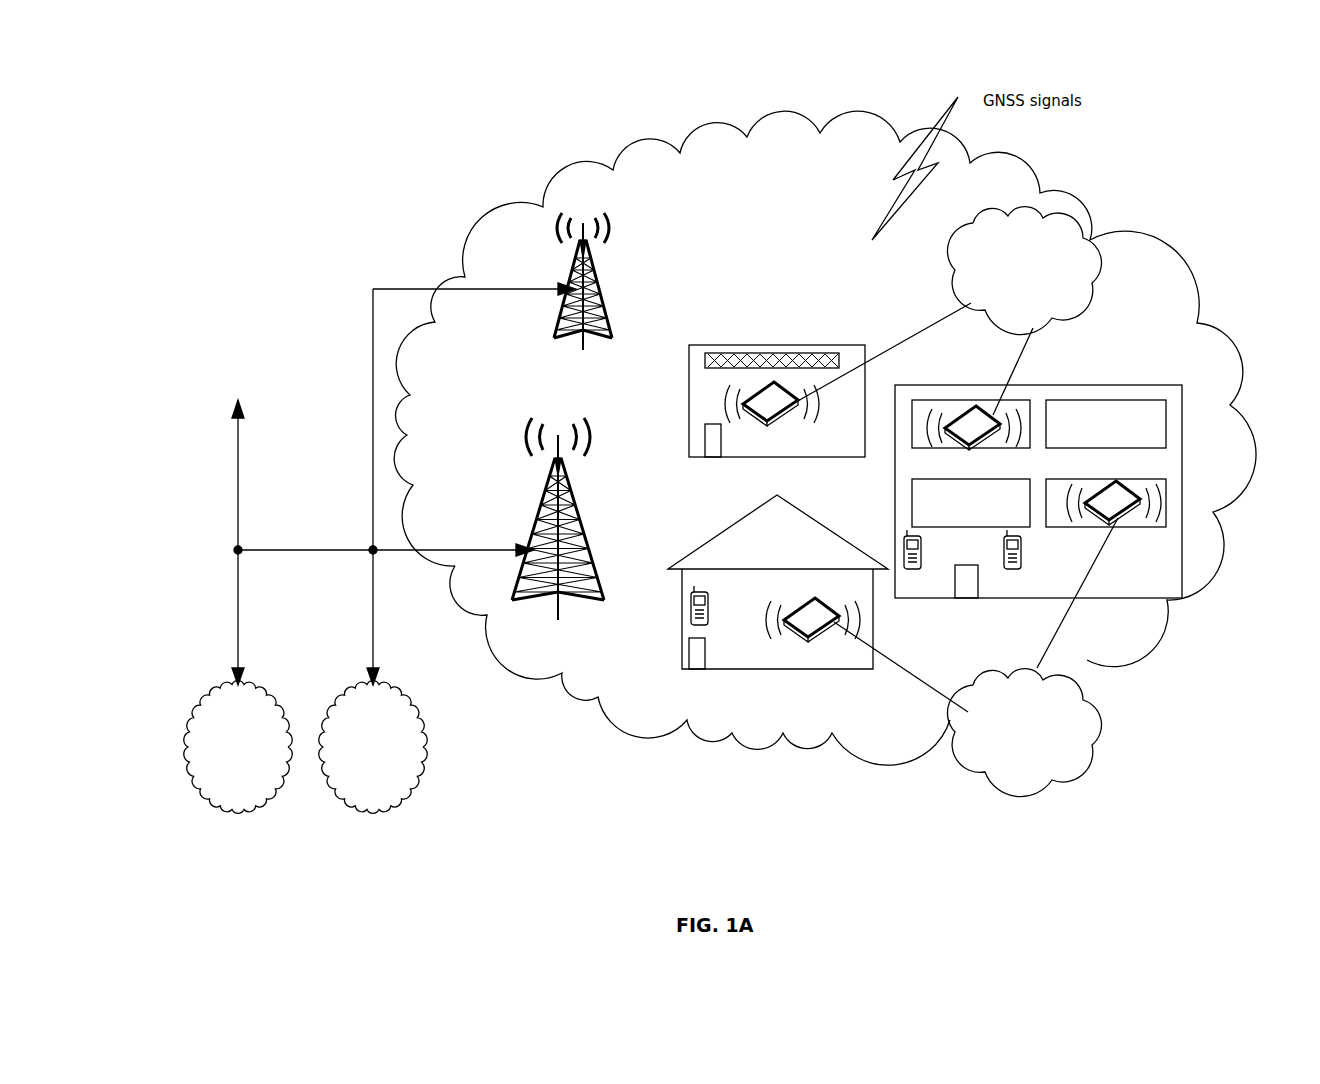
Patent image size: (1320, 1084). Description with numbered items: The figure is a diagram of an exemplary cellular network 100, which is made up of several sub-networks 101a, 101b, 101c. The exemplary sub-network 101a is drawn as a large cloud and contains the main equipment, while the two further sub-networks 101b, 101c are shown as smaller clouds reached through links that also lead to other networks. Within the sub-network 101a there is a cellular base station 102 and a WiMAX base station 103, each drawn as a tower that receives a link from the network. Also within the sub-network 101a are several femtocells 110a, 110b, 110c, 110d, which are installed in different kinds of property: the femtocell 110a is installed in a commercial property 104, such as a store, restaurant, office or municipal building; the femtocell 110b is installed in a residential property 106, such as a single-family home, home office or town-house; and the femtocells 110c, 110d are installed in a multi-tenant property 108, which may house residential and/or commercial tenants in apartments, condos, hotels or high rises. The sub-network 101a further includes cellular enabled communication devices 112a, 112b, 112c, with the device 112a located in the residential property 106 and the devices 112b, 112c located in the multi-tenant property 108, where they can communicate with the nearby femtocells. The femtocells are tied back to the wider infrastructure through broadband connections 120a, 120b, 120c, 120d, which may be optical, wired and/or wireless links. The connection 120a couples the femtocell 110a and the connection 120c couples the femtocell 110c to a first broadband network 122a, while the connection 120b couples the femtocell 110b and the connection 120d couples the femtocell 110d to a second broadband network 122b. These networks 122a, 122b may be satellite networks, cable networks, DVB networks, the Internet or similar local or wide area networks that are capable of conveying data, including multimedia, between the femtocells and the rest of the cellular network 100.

The cellular network 100 is at (286, 219).
The sub-network 101a is at (620, 147).
The sub-network 101b is at (240, 812).
The sub-network 101c is at (313, 549).
The cellular base station 102 is at (570, 500).
The WiMAX base station 103 is at (594, 286).
The commercial property 104 is at (720, 345).
The residential property 106 is at (718, 535).
The multi-tenant property 108 is at (1183, 417).
The femtocell 110a is at (774, 419).
The femtocell 110b is at (810, 638).
The femtocell 110c is at (976, 443).
The femtocell 110d is at (1116, 519).
The cellular enabled communication device 112a is at (710, 597).
The cellular enabled communication device 112b is at (918, 570).
The cellular enabled communication device 112c is at (1022, 569).
The broadband connection 120a is at (940, 318).
The broadband connection 120b is at (912, 682).
The broadband connection 120c is at (1007, 375).
The broadband connection 120d is at (1062, 626).
The network 122a is at (1092, 311).
The network 122b is at (1093, 760).